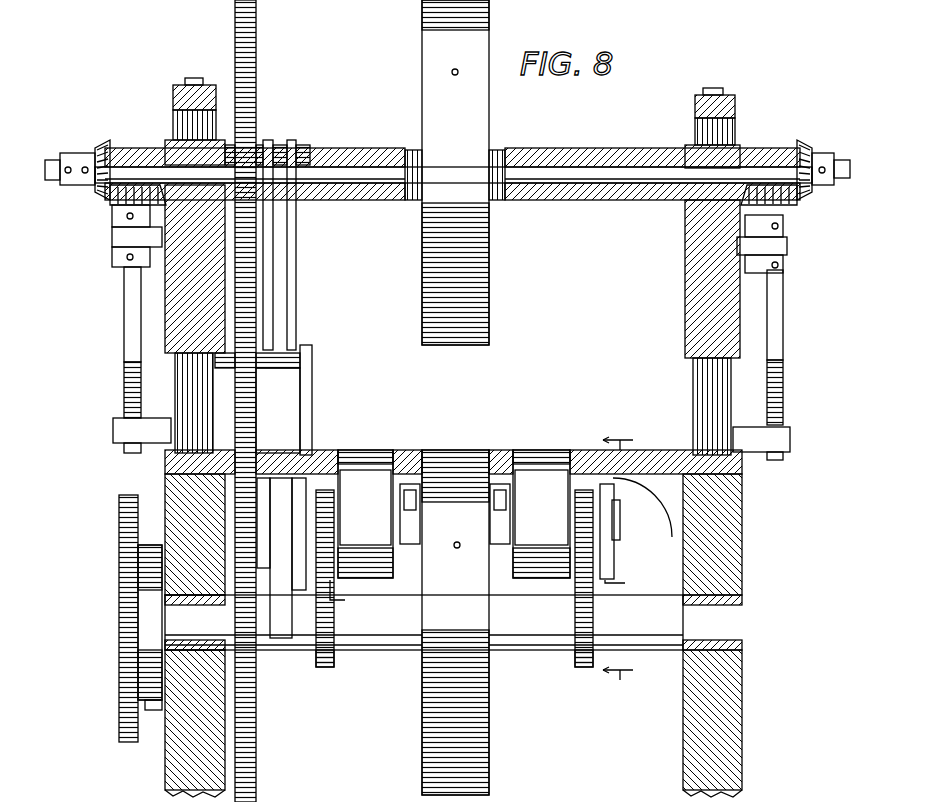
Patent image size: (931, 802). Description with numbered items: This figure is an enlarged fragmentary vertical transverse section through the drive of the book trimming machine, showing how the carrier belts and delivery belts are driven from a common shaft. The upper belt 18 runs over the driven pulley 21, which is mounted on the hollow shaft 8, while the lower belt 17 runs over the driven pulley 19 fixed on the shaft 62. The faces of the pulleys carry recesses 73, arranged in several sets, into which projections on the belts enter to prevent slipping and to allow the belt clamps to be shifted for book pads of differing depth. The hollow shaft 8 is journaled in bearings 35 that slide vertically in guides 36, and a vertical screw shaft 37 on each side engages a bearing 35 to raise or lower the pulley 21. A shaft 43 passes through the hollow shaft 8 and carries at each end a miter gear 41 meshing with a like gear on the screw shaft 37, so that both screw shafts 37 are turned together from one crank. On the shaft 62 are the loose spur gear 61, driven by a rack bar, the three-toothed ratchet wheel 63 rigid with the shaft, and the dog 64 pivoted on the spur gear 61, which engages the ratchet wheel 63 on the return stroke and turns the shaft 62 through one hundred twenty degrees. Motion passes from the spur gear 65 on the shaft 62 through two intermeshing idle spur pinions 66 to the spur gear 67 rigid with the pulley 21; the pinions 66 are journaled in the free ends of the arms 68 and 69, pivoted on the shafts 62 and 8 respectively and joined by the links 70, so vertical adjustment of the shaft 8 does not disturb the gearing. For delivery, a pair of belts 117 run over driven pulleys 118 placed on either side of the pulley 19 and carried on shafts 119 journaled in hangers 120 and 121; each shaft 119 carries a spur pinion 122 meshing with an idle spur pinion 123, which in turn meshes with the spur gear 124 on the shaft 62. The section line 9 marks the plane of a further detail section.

The hollow shaft 8 is at (590, 150).
The section line 9 is at (618, 555).
The belt 17 is at (452, 452).
The belt 18 is at (422, 5).
The driven pulley 19 is at (489, 740).
The driven pulley 21 is at (428, 88).
The bearings 35 is at (165, 283).
The guides 36 is at (188, 407).
The vertical screw shaft 37 is at (125, 330).
The miter gear 41 is at (120, 185).
The shaft 43 is at (588, 190).
The spur gear 61 is at (138, 566).
The shaft 62 is at (540, 630).
The ratchet wheel 63 is at (150, 705).
The dog 64 is at (119, 536).
The spur gear 65 is at (257, 752).
The idle spur pinion 66 is at (270, 382).
The spur gear 67 is at (275, 260).
The arm 68 is at (300, 540).
The arm 69 is at (292, 325).
The link 70 is at (309, 388).
The recess 73 is at (458, 70).
The belt 117 is at (366, 450).
The driven pulley 118 is at (454, 507).
The shaft 119 is at (303, 515).
The hanger 120 is at (455, 527).
The hanger 121 is at (622, 545).
The spur pinion 122 is at (326, 490).
The idle spur pinion 123 is at (332, 600).
The spur gear 124 is at (322, 667).